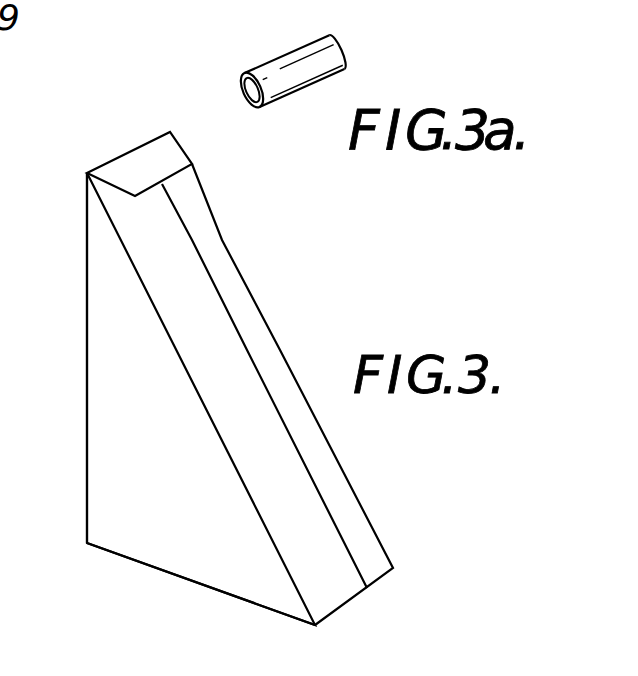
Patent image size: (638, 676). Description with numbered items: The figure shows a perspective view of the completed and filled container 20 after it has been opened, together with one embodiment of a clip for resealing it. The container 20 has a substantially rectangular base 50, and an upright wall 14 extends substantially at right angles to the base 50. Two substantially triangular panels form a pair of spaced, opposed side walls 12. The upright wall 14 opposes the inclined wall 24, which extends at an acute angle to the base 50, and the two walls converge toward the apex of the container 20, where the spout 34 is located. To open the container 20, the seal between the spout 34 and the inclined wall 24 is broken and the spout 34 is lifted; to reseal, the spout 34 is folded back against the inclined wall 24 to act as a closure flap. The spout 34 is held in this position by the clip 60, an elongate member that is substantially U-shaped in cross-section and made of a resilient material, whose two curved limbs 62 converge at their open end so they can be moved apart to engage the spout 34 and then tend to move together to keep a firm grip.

In FIG. 3, the side walls 12 is at (188, 508).
In FIG. 3, the upright wall 14 is at (86, 312).
In FIG. 3, the container 20 is at (206, 373).
In FIG. 3, the inclined wall 24 is at (298, 491).
In FIG. 3, the spout 34 is at (139, 158).
In FIG. 3, the base 50 is at (148, 567).
In FIG. 3A, the clip 60 is at (336, 97).
In FIG. 3A, the limbs 62 is at (290, 79).